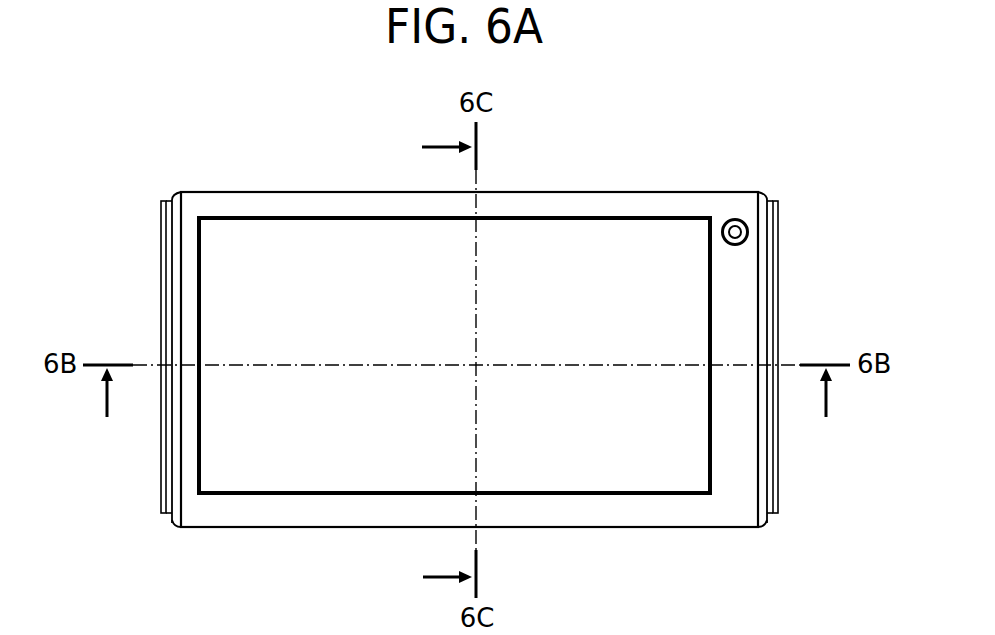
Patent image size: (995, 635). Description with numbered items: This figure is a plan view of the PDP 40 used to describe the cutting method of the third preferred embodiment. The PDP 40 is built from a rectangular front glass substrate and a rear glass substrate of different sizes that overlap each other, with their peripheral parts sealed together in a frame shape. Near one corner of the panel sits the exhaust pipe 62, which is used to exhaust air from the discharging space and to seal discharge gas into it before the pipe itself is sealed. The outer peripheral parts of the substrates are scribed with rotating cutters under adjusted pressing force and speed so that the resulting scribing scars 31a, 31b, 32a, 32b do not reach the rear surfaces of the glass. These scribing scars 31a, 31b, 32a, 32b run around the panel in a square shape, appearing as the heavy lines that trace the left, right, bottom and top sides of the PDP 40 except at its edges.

The PDP 40 is at (153, 188).
The scribing scar 31a is at (201, 293).
The scribing scar 31b is at (709, 308).
The scribing scar 32a is at (365, 494).
The scribing scar 32b is at (366, 216).
The exhaust pipe 62 is at (735, 232).